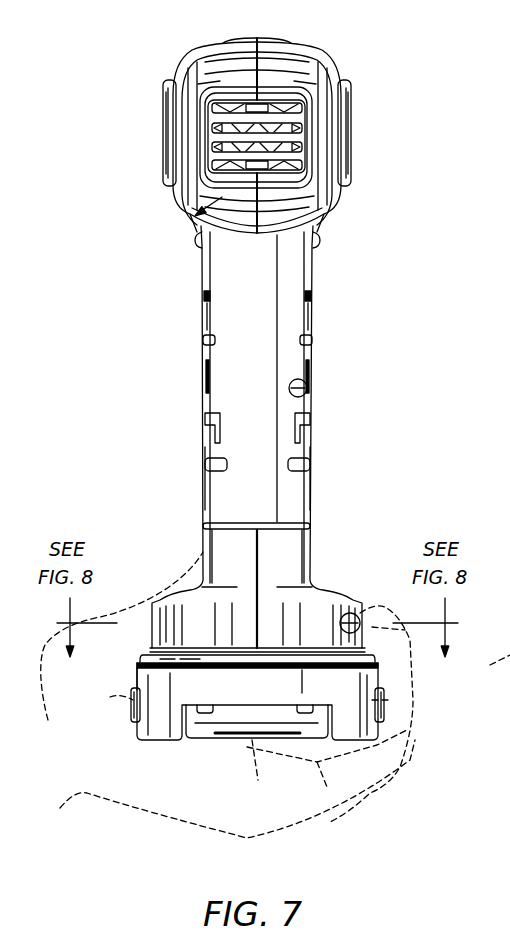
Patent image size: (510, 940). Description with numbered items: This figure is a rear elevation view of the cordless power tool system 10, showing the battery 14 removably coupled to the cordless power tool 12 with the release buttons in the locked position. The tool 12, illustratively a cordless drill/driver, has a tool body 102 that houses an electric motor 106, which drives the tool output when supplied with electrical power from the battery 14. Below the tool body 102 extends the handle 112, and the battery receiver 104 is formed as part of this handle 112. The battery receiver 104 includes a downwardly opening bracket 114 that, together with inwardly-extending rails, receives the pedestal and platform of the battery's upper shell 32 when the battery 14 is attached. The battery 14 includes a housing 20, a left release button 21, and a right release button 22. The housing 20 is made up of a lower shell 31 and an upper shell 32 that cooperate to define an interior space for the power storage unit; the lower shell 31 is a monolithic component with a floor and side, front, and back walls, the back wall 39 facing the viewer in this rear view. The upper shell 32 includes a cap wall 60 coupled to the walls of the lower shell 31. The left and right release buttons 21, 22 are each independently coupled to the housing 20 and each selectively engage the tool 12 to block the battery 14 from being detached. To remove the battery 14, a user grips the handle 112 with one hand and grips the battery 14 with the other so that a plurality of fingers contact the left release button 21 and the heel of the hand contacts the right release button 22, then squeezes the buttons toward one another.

The cordless power tool system 10 is at (373, 96).
The tool body 102 is at (172, 54).
The electric motor 106 is at (196, 226).
The cordless power tool 12 is at (322, 265).
The handle 112 is at (322, 373).
The battery receiver 104 is at (327, 531).
The downwardly opening bracket 114 is at (325, 595).
The upper shell 32 is at (366, 653).
The cap wall 60 is at (157, 659).
The housing 20 is at (218, 750).
The battery 14 is at (132, 680).
The right release button 22 is at (131, 710).
The left release button 21 is at (384, 717).
The back wall 39 is at (158, 715).
The lower shell 31 is at (342, 715).